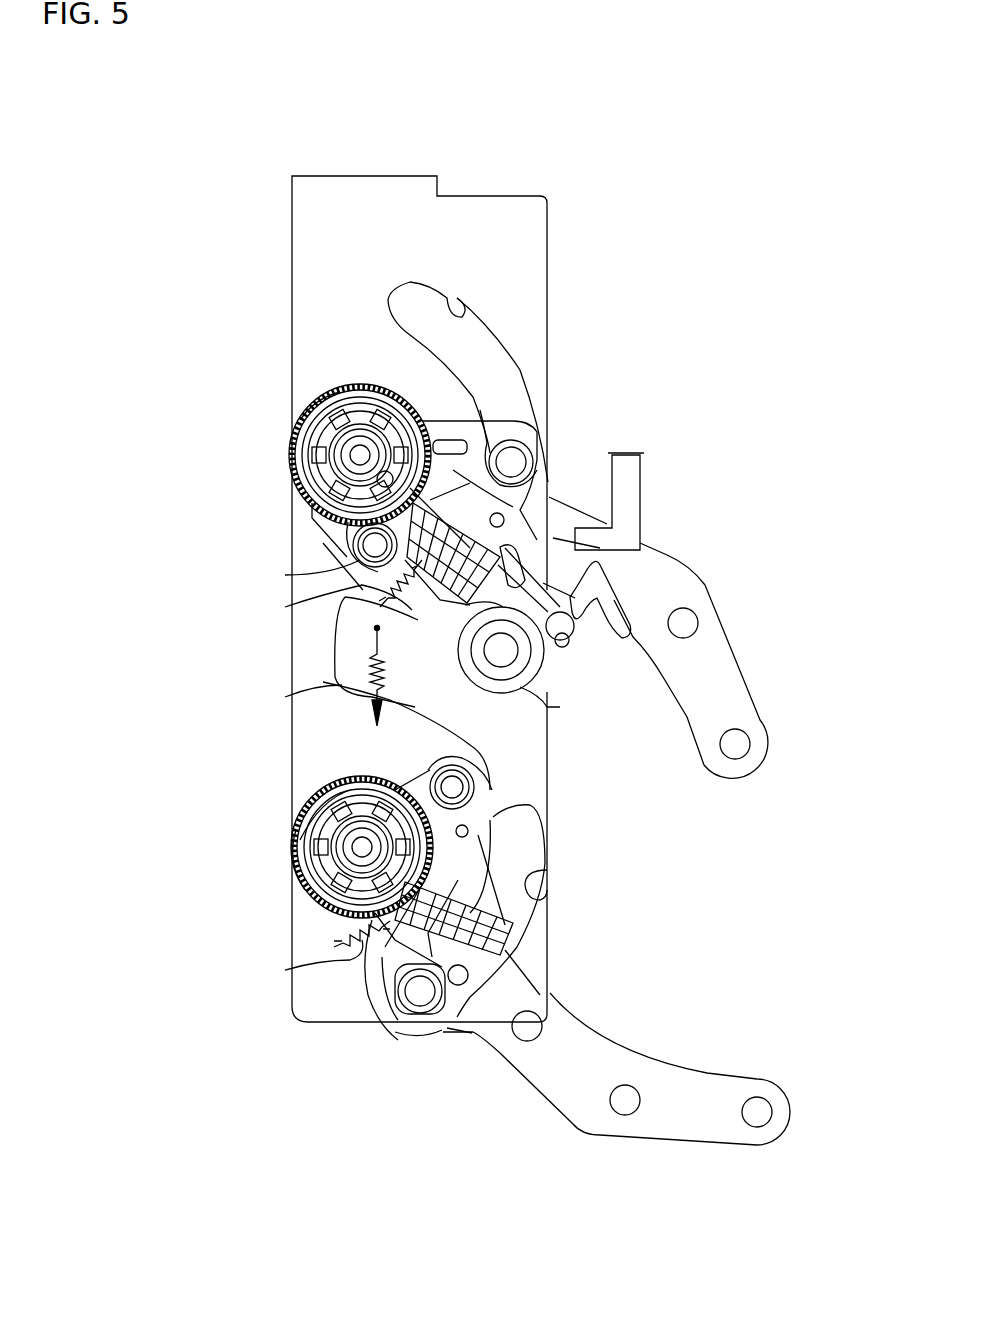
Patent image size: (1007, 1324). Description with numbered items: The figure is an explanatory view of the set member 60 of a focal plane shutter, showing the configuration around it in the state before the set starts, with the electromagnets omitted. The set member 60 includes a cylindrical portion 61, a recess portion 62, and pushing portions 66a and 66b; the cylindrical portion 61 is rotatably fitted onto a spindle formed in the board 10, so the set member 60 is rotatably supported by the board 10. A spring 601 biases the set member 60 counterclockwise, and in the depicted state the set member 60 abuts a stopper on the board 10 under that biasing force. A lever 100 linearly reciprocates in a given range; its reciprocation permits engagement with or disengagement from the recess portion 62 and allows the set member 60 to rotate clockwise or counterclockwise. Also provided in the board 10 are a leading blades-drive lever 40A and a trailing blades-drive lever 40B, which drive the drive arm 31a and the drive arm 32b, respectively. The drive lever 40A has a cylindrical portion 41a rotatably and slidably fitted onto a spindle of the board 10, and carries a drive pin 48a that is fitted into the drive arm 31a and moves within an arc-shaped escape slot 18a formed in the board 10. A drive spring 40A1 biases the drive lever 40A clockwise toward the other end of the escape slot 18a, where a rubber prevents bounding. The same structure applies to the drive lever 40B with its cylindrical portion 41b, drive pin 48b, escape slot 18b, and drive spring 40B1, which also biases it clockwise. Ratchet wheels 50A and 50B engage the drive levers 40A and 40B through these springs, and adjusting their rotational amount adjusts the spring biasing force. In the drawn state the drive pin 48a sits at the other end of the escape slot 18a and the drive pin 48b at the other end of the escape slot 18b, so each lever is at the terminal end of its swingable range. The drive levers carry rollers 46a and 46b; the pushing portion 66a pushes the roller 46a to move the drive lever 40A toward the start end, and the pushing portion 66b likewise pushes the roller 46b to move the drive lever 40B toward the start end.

The board 10 is at (302, 1012).
The escape slot 18a is at (548, 880).
The escape slot 18b is at (473, 298).
The drive arm 31a is at (669, 1136).
The drive arm 32b is at (742, 660).
The leading blades-drive lever 40A is at (405, 782).
The drive spring 40A1 is at (355, 950).
The trailing blades-drive lever 40B is at (297, 522).
The drive spring 40B1 is at (398, 592).
The cylindrical portion 41a is at (335, 862).
The cylindrical portion 41b is at (324, 396).
The roller 46a is at (440, 778).
The roller 46b is at (352, 566).
The drive pin 48a is at (425, 1021).
The drive pin 48b is at (513, 423).
The ratchet wheel 50A is at (290, 850).
The ratchet wheel 50B is at (291, 444).
The set member 60 is at (553, 757).
The spring 601 is at (345, 683).
The cylindrical portion 61 is at (556, 705).
The recess portion 62 is at (572, 650).
The pushing portion 66a is at (512, 806).
The pushing portion 66b is at (352, 657).
The lever 100 is at (643, 481).